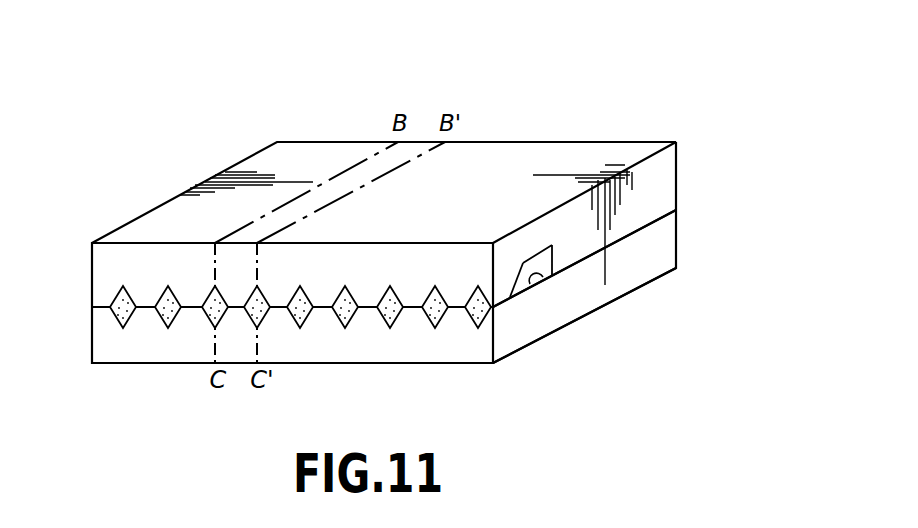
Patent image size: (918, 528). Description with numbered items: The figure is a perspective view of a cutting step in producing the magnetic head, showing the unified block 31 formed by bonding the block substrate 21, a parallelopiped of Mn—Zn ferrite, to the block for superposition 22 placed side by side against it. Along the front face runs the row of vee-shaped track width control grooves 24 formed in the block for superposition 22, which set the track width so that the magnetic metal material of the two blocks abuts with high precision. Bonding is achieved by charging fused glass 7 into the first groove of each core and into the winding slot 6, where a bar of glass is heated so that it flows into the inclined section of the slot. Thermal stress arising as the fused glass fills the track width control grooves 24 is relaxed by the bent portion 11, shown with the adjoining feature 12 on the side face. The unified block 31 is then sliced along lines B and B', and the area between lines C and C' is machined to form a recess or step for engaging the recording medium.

The unified block 31 is at (660, 121).
The block substrate 21 is at (655, 182).
The block for superposition 22 is at (655, 250).
The bent portion 11 is at (522, 262).
The terminal portion 12 is at (524, 262).
The winding slot 6 is at (543, 277).
The fused glass 7 is at (490, 319).
The track width control groove 24 is at (122, 328).